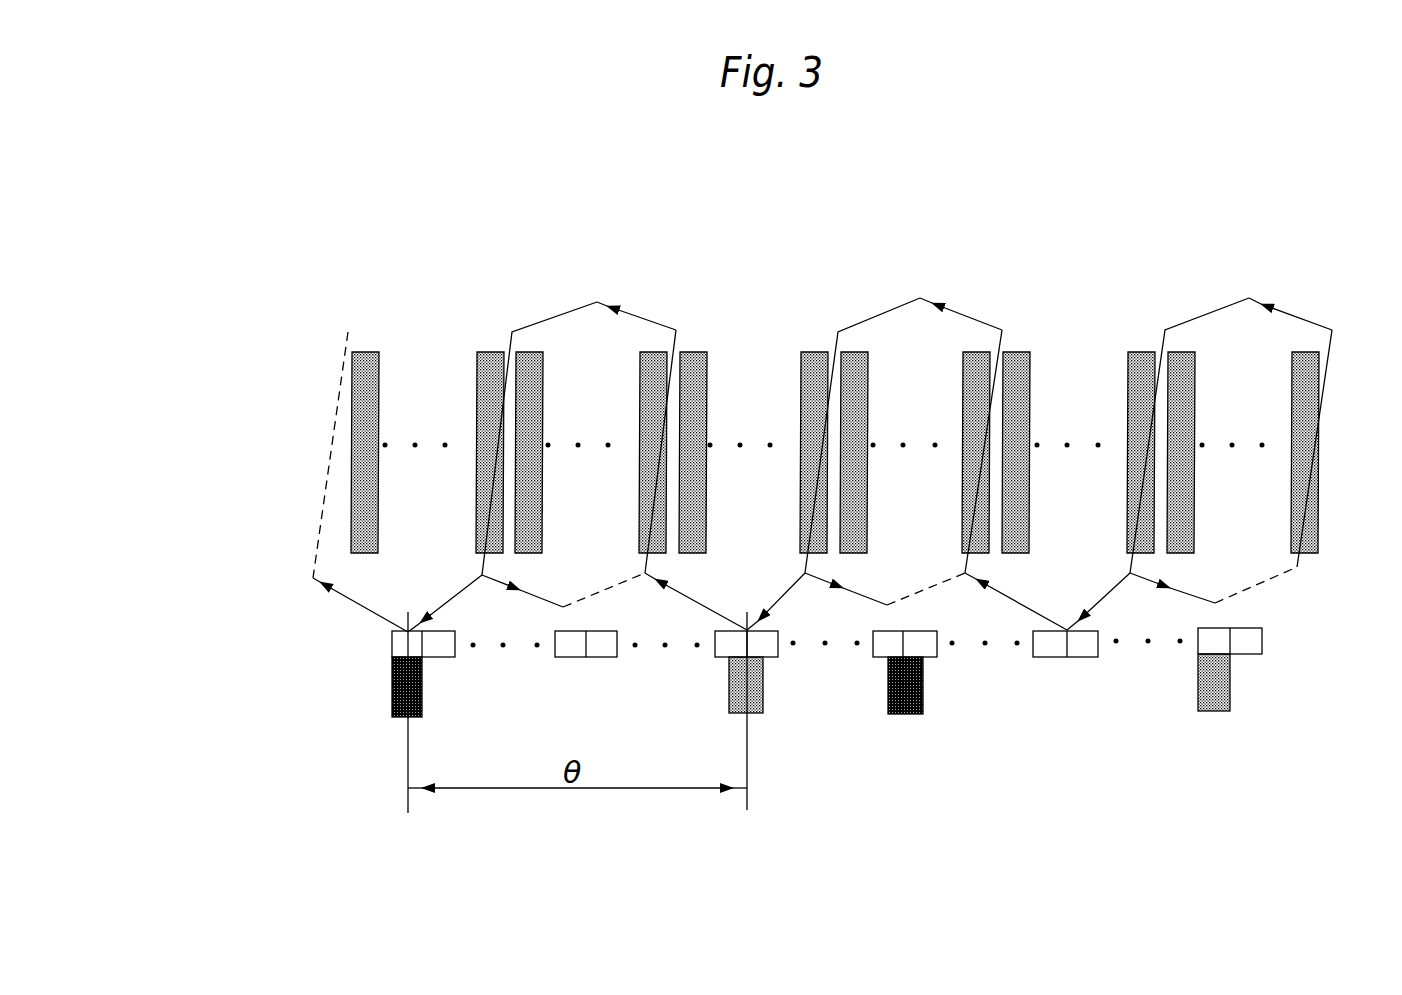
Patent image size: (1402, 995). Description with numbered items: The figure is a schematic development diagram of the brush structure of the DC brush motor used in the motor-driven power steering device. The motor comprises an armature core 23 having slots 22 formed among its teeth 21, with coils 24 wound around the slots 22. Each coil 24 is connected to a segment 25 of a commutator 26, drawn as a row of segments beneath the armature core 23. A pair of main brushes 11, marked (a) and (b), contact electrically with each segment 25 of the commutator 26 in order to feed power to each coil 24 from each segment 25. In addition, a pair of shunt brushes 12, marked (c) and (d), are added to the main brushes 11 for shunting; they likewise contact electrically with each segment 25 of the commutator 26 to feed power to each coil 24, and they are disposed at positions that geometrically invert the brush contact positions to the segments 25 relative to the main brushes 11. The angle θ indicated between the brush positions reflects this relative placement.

The main brush 11 is at (392, 722).
The shunt brush 12 is at (757, 714).
The teeth 21 is at (483, 371).
The slot 22 is at (507, 357).
The armature core 23 is at (316, 417).
The coil 24 is at (644, 322).
The segment 25 is at (393, 646).
The commutator 26 is at (366, 639).